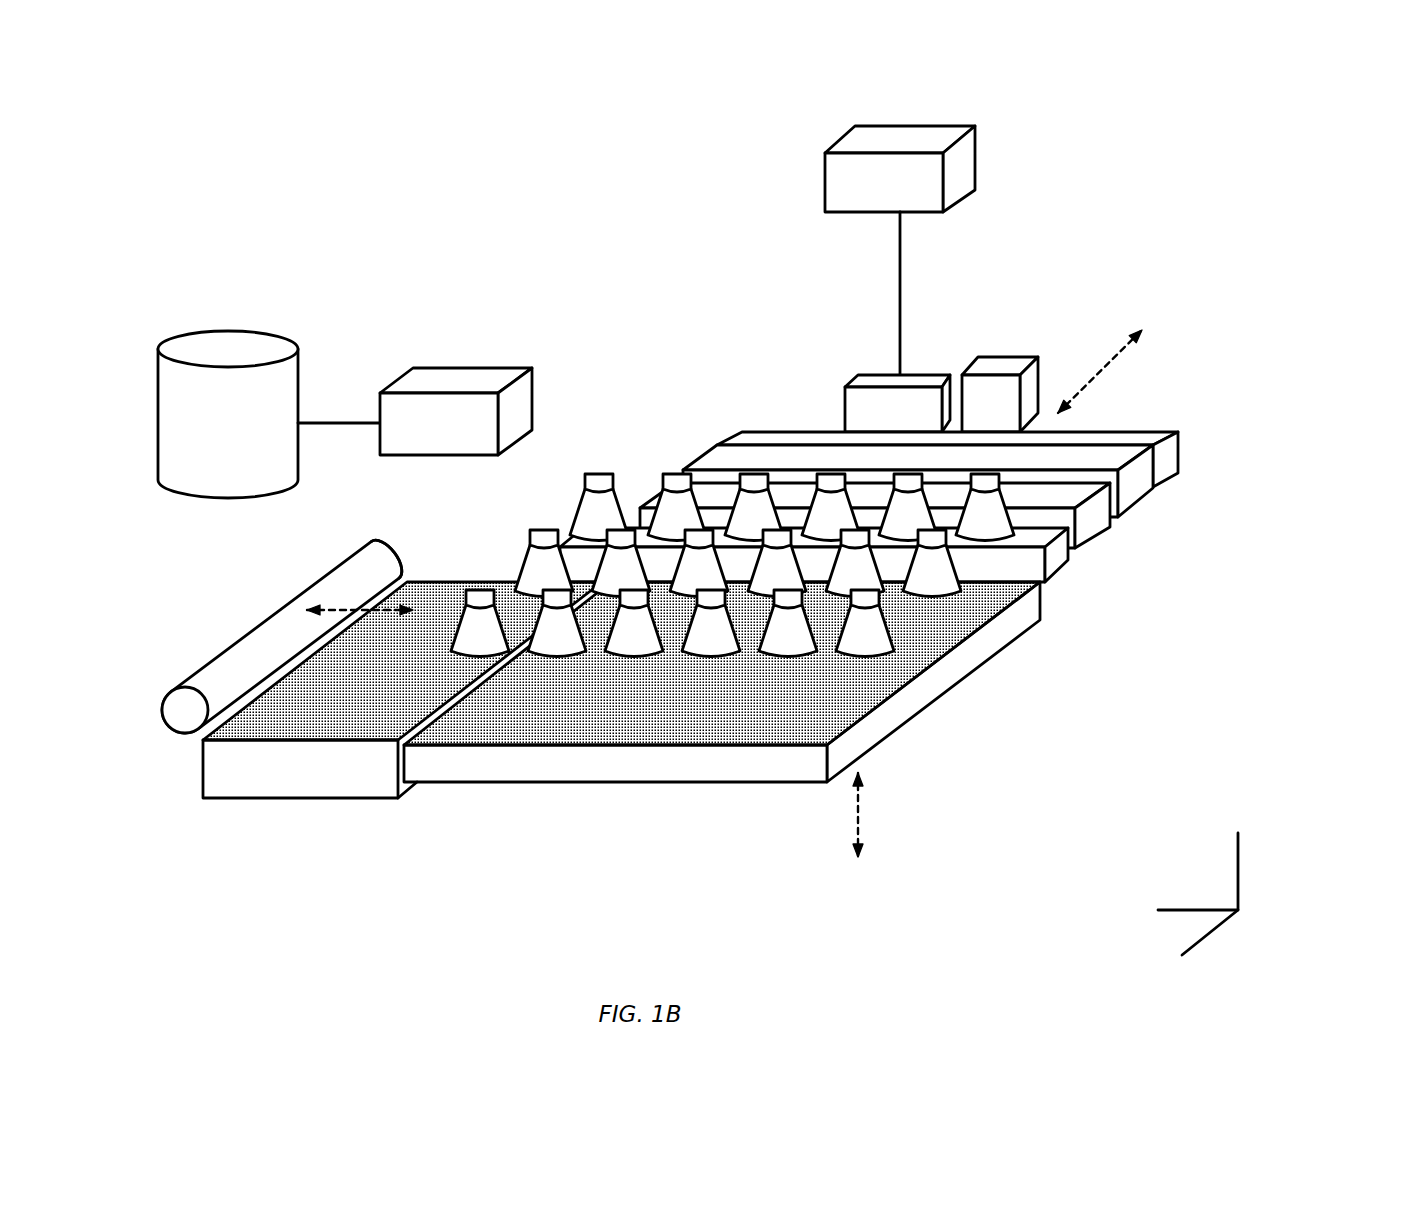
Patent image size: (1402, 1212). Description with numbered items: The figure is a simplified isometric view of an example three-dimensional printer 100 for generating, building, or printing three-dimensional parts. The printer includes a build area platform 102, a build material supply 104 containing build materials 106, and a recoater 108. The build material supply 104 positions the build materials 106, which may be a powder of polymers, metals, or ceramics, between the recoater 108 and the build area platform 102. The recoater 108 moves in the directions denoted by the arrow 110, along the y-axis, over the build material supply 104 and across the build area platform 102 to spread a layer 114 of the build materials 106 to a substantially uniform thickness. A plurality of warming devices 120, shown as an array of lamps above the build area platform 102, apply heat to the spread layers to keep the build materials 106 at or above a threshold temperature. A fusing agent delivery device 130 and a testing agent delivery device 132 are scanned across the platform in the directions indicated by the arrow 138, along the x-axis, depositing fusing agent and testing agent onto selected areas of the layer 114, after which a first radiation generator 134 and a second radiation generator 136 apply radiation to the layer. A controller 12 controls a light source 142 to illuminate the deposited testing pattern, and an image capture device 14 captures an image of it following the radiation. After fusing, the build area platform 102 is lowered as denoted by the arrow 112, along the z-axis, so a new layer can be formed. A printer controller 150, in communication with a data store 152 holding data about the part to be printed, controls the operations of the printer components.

The three-dimensional (3D) printer 100 is at (262, 180).
The build area platform 102 is at (722, 746).
The build material supply 104 is at (322, 772).
The build materials 106 is at (228, 733).
The recoater 108 is at (222, 650).
The arrow 110 is at (365, 536).
The arrow 112 is at (858, 805).
The layer 114 is at (877, 693).
The warming devices 120 is at (600, 474).
The fusing agent (FA) delivery device 130 is at (1093, 540).
The testing agent (TA) delivery device 132 is at (1140, 507).
The first radiation generator 134 is at (1060, 570).
The second radiation generator 136 is at (1152, 432).
The arrow 138 is at (1100, 368).
The light source 142 is at (990, 357).
The printer controller 150 is at (480, 368).
The data store 152 is at (208, 470).
The controller 12 is at (825, 192).
The image capture device 14 is at (850, 387).